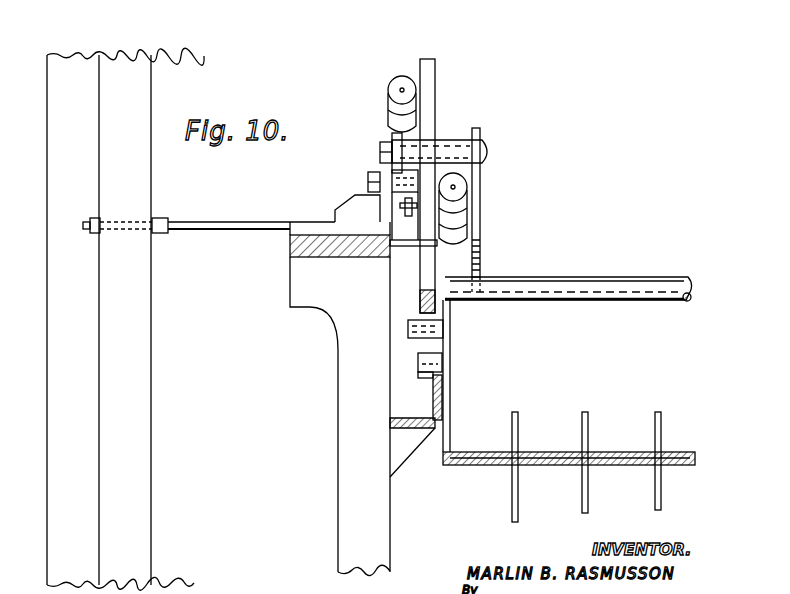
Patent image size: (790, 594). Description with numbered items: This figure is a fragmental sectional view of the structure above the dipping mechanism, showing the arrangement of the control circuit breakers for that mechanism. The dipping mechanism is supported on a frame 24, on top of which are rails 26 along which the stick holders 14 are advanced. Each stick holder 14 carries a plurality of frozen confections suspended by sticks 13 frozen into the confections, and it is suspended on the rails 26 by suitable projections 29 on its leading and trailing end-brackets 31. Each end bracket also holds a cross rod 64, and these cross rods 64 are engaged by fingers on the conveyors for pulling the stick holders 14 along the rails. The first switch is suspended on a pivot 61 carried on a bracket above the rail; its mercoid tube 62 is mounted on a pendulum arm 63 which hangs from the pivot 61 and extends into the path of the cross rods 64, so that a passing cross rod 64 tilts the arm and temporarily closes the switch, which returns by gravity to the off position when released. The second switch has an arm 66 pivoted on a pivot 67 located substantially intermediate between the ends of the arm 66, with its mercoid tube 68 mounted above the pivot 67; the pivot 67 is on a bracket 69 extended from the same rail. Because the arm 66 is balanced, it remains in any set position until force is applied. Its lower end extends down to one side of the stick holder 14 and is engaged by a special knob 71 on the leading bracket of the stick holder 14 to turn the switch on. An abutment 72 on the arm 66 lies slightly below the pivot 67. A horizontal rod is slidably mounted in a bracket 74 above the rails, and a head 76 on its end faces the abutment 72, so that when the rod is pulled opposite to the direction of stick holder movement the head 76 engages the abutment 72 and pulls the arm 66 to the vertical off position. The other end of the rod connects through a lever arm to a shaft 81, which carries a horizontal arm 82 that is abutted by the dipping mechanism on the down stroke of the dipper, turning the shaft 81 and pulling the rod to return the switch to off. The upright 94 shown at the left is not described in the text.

The upright post 94 is at (82, 65).
The frame 24 is at (340, 535).
The bracket 69 is at (311, 222).
The head 76 is at (388, 252).
The bracket 74 is at (352, 198).
The shaft 81 is at (228, 220).
The horizontal arm 82 is at (168, 233).
The arm 66 is at (435, 72).
The pivot 61 is at (452, 143).
The mercoid tube 68 is at (393, 92).
The mercoid tube 62 is at (457, 190).
The pivot 67 is at (395, 173).
The abutment 72 is at (412, 216).
The pendulum arm 63 is at (480, 256).
The cross rod 64 is at (592, 283).
The knob 71 is at (443, 330).
The projections 29 is at (442, 364).
The rails 26 is at (436, 398).
The end-brackets 31 is at (451, 393).
The stick holder 14 is at (635, 466).
The sticks 13 is at (582, 496).